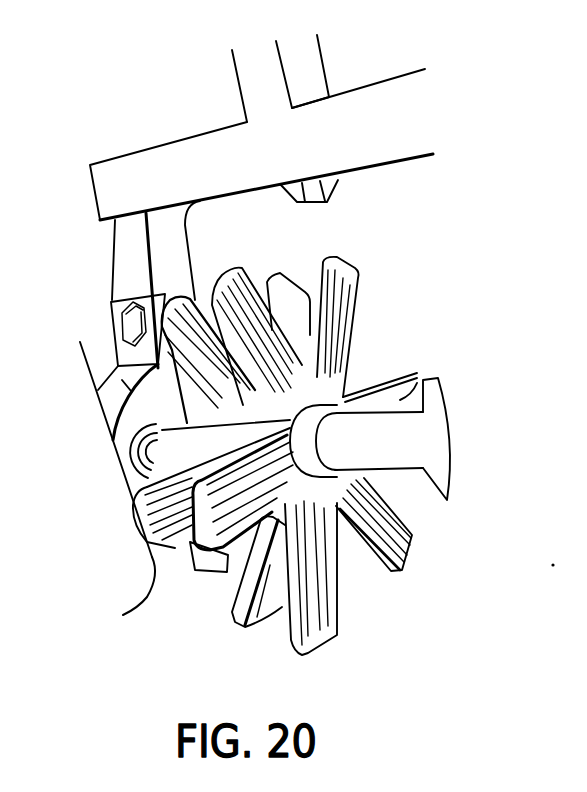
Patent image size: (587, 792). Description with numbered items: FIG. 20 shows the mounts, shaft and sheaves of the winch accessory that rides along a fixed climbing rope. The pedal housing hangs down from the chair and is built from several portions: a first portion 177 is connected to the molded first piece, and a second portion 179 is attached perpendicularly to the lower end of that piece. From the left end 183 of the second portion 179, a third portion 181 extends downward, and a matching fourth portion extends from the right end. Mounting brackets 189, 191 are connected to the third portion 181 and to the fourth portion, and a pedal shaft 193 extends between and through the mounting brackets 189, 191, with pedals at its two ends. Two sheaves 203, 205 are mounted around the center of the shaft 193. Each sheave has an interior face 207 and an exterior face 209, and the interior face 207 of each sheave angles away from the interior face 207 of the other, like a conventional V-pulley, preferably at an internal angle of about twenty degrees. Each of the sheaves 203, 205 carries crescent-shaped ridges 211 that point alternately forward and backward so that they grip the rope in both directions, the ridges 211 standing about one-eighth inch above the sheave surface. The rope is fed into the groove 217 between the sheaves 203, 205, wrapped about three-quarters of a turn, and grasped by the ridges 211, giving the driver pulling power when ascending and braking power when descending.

The first portion 177 is at (242, 92).
The second portion 179 is at (387, 78).
The third portion 181 is at (117, 257).
The left end 183 is at (88, 166).
The mounting bracket 189 is at (160, 427).
The mounting bracket 191 is at (423, 430).
The pedal shaft 193 is at (405, 470).
The sheave 203 is at (150, 560).
The sheave 205 is at (305, 658).
The interior face 207 is at (297, 282).
The exterior face 209 is at (335, 598).
The crescent-shaped ridges 211 is at (373, 387).
The groove 217 is at (212, 560).